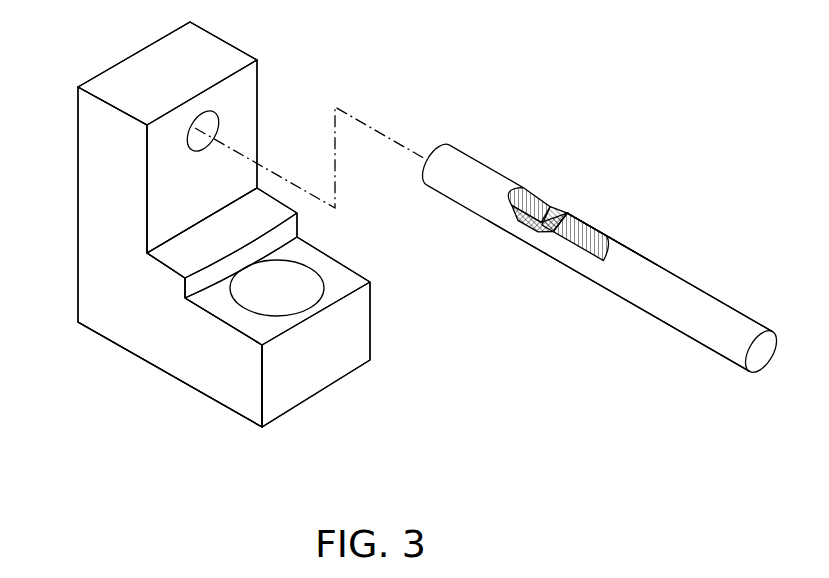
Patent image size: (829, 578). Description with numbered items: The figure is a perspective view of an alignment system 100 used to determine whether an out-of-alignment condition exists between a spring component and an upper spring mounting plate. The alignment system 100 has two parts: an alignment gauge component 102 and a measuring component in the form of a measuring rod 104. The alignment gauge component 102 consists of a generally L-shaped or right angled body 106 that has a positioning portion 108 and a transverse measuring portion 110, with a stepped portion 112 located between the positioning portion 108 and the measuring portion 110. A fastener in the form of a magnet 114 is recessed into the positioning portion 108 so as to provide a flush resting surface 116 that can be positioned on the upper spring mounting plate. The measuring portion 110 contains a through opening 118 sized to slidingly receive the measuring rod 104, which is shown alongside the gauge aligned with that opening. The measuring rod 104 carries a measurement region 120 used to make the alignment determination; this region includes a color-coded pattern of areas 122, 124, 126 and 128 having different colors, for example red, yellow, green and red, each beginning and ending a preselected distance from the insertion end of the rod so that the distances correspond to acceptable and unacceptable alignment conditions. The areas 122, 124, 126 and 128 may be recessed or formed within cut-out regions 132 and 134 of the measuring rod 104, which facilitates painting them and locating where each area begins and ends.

The alignment system 100 is at (650, 131).
The alignment gauge component 102 is at (119, 386).
The measuring rod 104 is at (711, 267).
The body 106 is at (88, 290).
The positioning portion 108 is at (358, 278).
The measuring portion 110 is at (250, 92).
The stepped portion 112 is at (192, 240).
The magnet 114 is at (298, 277).
The flush resting surface 116 is at (265, 333).
The through opening 118 is at (205, 120).
The measurement region 120 is at (644, 206).
The area 122 is at (528, 198).
The area 124 is at (557, 210).
The area 126 is at (552, 233).
The area 128 is at (603, 255).
The cut-out region 132 is at (642, 236).
The cut-out region 134 is at (518, 257).